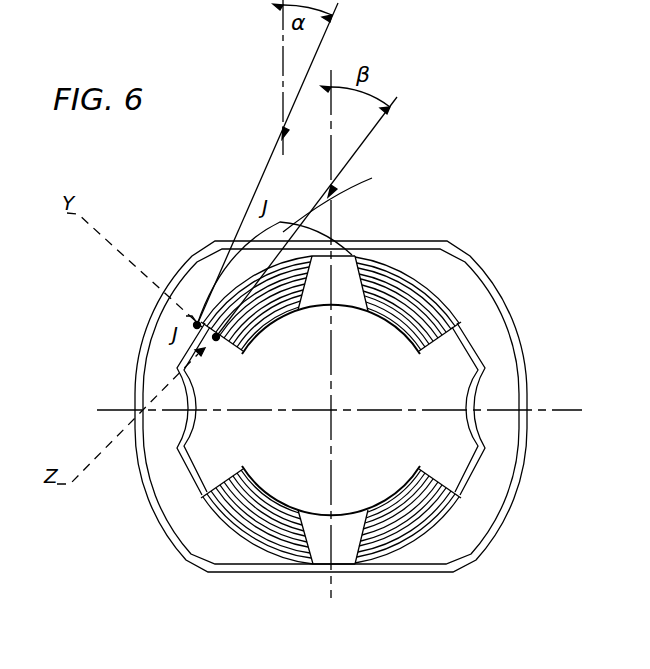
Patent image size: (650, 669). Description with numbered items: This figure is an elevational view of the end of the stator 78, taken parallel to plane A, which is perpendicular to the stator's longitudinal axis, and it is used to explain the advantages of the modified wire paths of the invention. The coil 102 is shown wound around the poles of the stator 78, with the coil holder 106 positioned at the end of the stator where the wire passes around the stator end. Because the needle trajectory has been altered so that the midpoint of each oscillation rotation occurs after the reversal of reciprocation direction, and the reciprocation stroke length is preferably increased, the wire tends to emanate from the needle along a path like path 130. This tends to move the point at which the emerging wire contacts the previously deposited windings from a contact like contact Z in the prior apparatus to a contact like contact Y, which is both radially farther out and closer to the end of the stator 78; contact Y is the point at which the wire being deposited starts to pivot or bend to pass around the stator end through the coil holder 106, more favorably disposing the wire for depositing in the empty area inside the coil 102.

The stator 78 is at (490, 315).
The coil 102 is at (402, 288).
The coil holder 106 is at (386, 320).
The path 130 is at (299, 242).